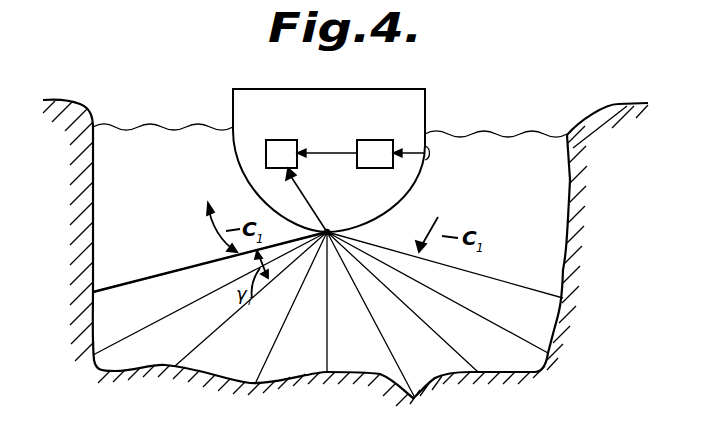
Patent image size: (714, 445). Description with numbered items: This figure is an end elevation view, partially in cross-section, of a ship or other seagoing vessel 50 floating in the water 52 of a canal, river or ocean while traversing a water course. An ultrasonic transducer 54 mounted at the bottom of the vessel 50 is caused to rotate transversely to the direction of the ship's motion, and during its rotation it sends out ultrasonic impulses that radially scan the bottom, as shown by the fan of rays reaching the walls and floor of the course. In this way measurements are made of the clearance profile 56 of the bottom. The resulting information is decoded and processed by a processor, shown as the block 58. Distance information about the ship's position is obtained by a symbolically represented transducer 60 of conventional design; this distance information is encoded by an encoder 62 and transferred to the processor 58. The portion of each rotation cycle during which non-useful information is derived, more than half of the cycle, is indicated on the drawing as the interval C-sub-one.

The ship or other seagoing vessel 50 is at (425, 103).
The water 52 is at (162, 127).
The ultrasonic transducer 54 is at (330, 232).
The clearance profile 56 is at (381, 380).
The processor 58 is at (285, 150).
The transducer 60 is at (428, 155).
The encoder 62 is at (380, 150).